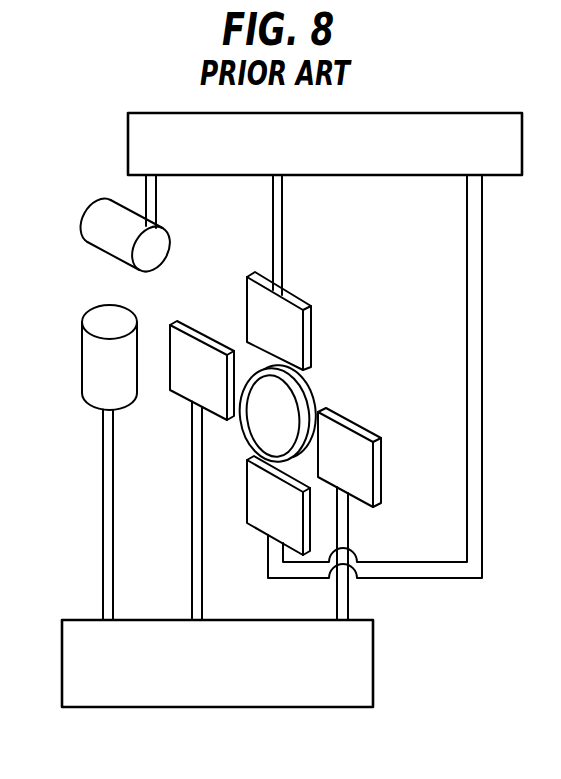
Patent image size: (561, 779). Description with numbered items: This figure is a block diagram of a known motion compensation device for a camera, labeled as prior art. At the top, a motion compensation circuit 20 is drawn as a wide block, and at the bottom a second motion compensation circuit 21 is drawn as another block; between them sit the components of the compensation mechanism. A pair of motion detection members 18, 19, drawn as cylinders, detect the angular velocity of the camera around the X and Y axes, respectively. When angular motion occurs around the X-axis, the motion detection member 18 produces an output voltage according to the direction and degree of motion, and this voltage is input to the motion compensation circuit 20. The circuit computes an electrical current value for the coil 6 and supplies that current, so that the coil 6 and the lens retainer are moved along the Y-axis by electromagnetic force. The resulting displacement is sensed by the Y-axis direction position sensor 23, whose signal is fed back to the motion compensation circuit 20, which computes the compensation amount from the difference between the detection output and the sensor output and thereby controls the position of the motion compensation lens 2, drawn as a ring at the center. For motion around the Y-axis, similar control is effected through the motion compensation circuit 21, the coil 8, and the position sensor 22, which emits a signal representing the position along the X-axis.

The motion compensation lens 2 is at (267, 419).
The coil 6 is at (290, 327).
The coil 8 is at (183, 340).
The motion detection member 18 is at (93, 230).
The motion detection member 19 is at (95, 362).
The motion compensation circuit 20 is at (395, 113).
The motion compensation circuit 21 is at (373, 635).
The position sensor 22 is at (359, 473).
The position sensor 23 is at (272, 505).